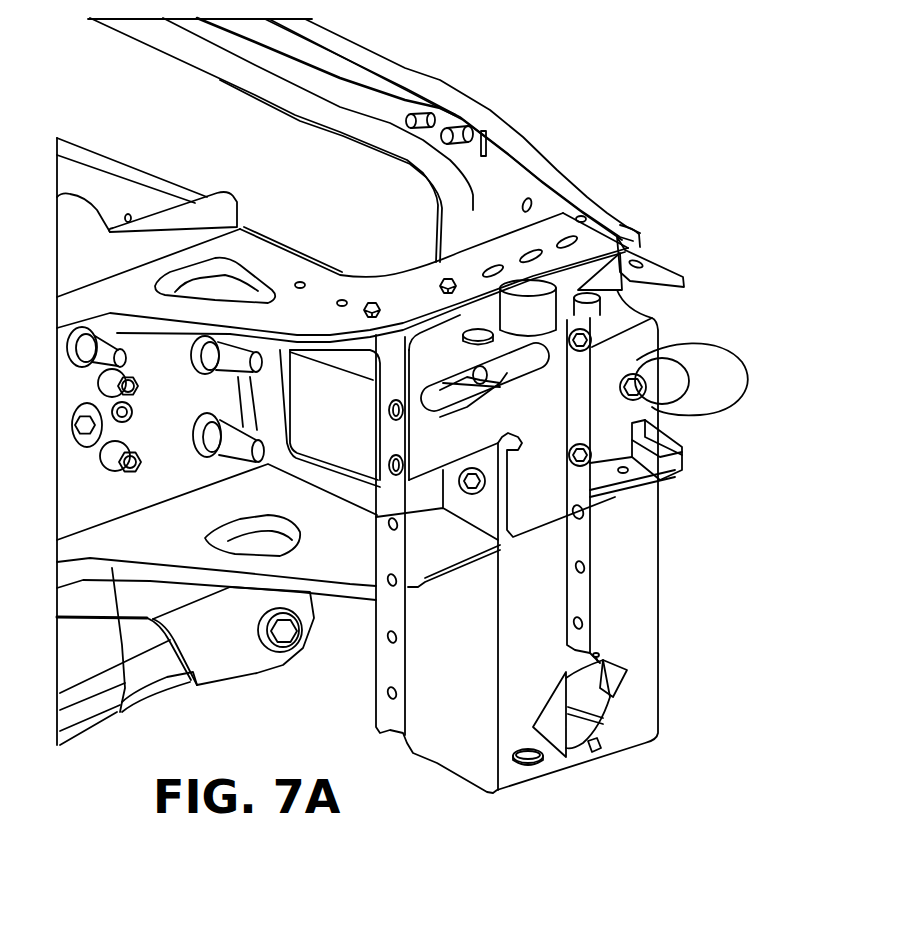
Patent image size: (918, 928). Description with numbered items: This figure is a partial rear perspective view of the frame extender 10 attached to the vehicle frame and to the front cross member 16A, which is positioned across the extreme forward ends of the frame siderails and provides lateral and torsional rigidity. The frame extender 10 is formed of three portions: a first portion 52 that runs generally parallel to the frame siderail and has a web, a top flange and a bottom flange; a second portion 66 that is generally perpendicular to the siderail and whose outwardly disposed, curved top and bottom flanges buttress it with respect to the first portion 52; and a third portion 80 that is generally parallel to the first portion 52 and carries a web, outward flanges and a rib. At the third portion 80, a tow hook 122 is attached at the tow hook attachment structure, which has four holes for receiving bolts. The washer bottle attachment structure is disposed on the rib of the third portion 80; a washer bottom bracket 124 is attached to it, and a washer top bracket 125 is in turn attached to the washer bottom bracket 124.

The frame extender 10 is at (262, 241).
The front cross member 16A is at (527, 147).
The first portion 52 is at (120, 712).
The second portion 66 is at (343, 498).
The third portion 80 is at (425, 287).
The tow hook 122 is at (700, 345).
The washer bottom bracket 124 is at (403, 438).
The washer top bracket 125 is at (625, 577).